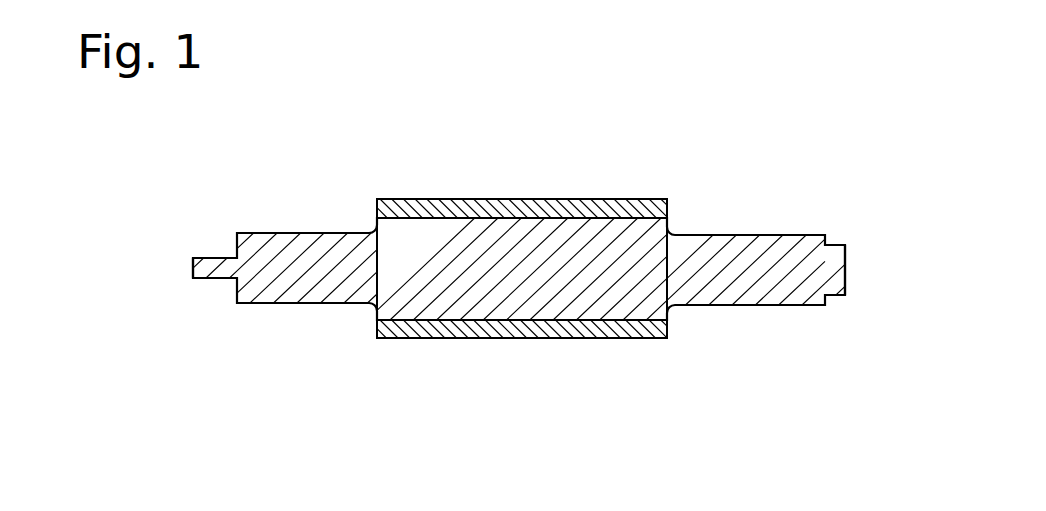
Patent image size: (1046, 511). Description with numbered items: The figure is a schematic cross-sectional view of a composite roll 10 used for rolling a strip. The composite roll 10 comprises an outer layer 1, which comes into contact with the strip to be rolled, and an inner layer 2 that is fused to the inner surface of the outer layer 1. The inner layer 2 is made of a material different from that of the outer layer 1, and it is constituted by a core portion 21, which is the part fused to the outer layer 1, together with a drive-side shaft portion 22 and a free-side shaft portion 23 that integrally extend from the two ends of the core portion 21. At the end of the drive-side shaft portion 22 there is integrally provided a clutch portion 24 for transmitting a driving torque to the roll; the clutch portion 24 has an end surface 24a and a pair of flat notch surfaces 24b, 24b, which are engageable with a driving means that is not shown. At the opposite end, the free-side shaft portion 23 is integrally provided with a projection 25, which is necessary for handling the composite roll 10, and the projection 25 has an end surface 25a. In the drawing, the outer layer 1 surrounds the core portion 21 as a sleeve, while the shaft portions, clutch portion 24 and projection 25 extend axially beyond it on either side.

The composite roll 10 is at (639, 160).
The outer layer 1 is at (464, 211).
The inner layer 2 is at (328, 311).
The core portion 21 is at (531, 241).
The drive-side shaft portion 22 is at (303, 243).
The free-side shaft portion 23 is at (753, 246).
The clutch portion 24 is at (189, 250).
The end surface 24a is at (193, 270).
The flat notch surfaces 24b is at (212, 257).
The projection 25 is at (835, 258).
The end surface 25a is at (845, 266).